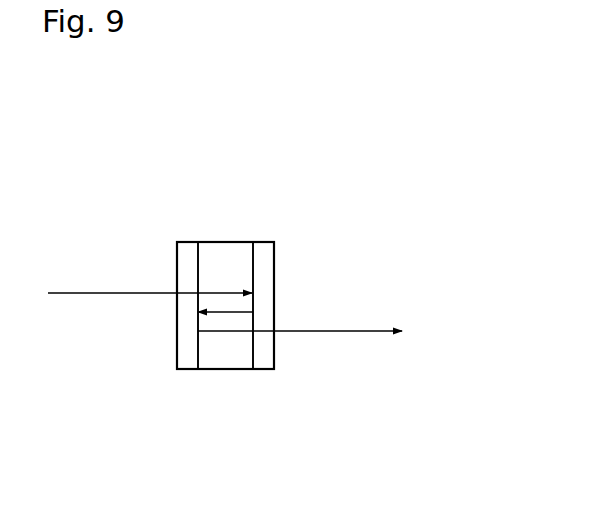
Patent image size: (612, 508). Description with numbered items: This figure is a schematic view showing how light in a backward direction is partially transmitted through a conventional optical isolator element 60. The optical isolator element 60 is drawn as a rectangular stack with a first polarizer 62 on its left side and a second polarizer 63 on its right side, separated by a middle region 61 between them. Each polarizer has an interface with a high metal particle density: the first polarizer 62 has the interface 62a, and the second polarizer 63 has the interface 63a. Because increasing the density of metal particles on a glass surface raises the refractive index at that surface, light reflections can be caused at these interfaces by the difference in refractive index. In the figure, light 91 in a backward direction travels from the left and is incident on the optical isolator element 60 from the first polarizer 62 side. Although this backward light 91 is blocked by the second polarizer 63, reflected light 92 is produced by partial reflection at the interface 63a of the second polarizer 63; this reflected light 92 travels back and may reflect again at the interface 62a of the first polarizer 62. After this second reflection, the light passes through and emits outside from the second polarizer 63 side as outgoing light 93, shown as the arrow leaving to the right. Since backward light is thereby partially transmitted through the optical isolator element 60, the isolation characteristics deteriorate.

The optical isolator element 60 is at (431, 64).
The substrate layer 61 is at (230, 245).
The first polarizer 62 is at (178, 252).
The interface 62a is at (198, 253).
The second polarizer 63 is at (278, 250).
The interface 63a is at (253, 250).
The light in a backward direction 91 is at (113, 294).
The reflected light 92 is at (225, 313).
The outgoing light 93 is at (340, 332).